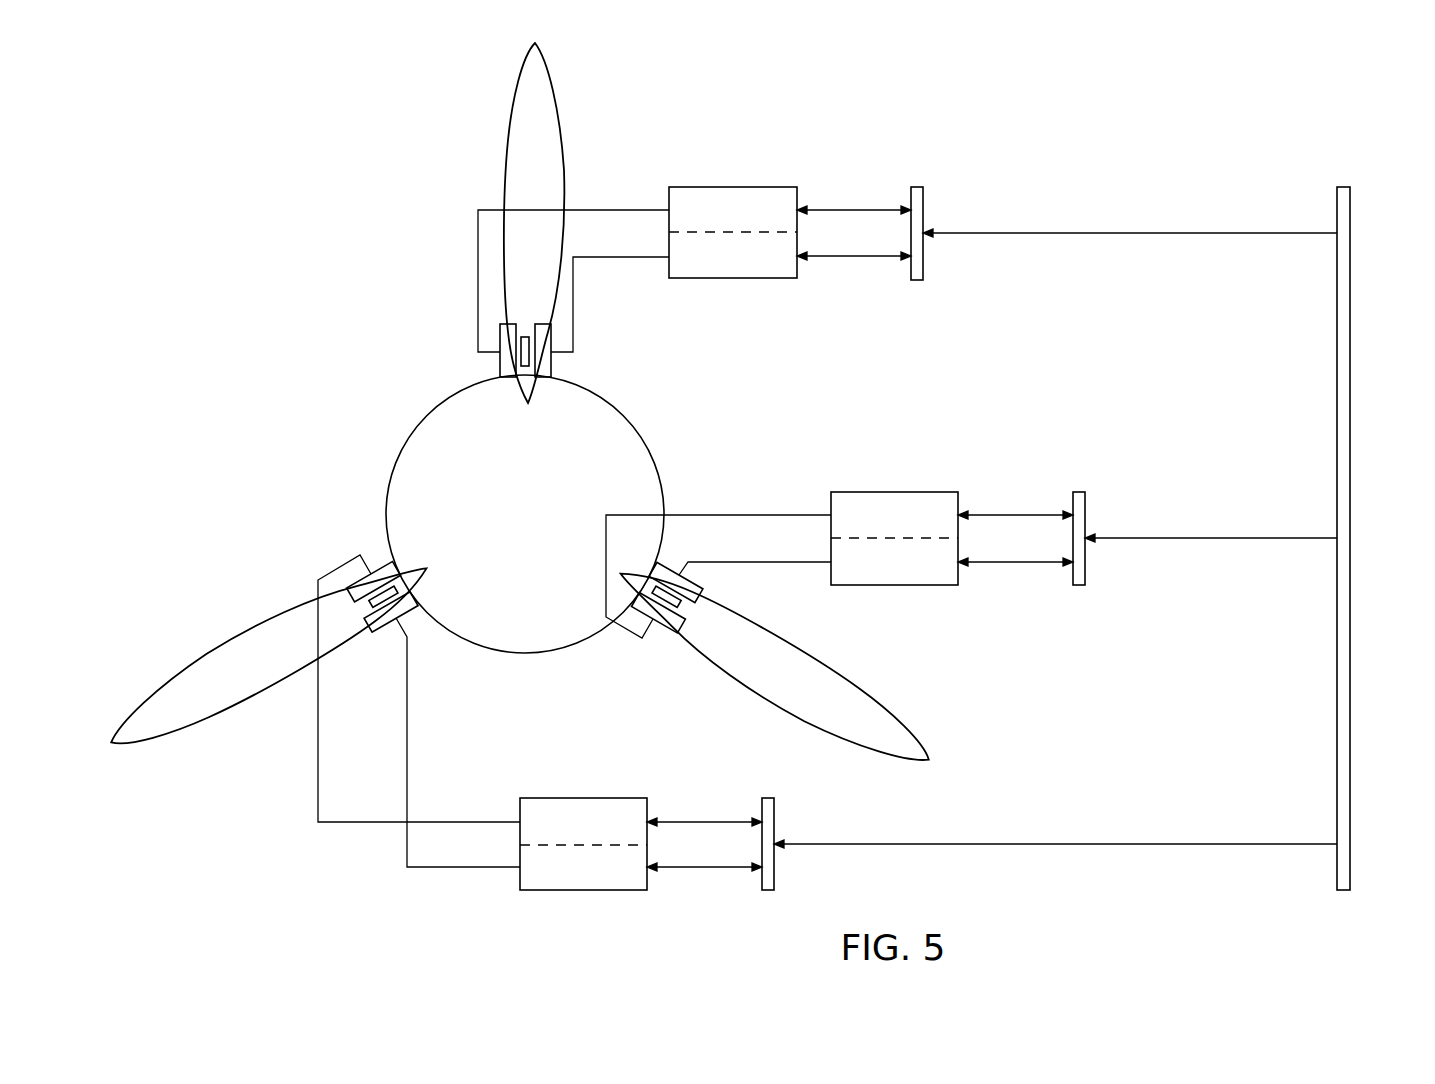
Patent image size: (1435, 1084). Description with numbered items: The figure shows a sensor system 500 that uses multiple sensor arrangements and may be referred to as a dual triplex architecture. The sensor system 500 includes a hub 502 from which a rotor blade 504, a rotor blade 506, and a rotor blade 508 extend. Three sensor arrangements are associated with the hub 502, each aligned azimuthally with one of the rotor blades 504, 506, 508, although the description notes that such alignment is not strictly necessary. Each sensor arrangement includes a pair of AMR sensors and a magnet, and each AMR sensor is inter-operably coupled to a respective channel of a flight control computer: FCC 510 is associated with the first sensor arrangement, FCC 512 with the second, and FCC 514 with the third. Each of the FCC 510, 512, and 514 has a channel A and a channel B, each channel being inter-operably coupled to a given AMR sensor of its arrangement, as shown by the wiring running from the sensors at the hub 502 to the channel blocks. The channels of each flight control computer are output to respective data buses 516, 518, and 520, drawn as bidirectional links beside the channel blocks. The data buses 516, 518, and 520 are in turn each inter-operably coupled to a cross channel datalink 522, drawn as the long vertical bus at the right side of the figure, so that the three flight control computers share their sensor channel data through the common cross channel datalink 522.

The sensor system 500 is at (1226, 103).
The hub 502 is at (430, 414).
The rotor blade 504 is at (507, 130).
The rotor blade 506 is at (870, 698).
The rotor blade 508 is at (190, 668).
The flight control computer 510 is at (733, 187).
The flight control computer 512 is at (897, 492).
The flight control computer 514 is at (583, 798).
The data bus 516 is at (925, 195).
The data bus 518 is at (1088, 577).
The data bus 520 is at (777, 880).
The cross channel datalink 522 is at (1352, 397).